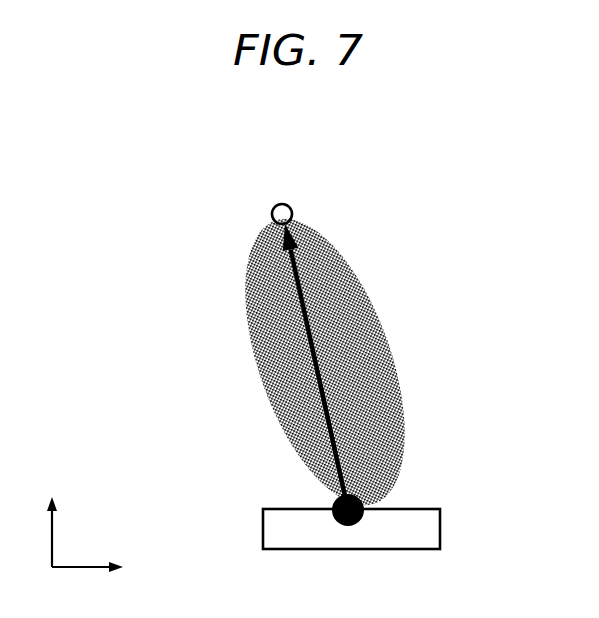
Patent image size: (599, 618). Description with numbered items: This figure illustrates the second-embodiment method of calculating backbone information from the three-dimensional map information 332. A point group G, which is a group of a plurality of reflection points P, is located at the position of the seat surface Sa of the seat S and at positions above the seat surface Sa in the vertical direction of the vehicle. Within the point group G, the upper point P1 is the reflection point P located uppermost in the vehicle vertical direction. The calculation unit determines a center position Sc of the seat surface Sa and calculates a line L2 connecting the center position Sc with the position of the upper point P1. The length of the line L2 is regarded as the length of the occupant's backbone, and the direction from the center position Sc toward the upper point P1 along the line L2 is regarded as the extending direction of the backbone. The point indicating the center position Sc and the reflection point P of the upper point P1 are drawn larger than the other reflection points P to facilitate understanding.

The three-dimensional map information 332 is at (491, 212).
The reflection points P is at (263, 264).
The upper point P1 is at (282, 203).
The point group G is at (314, 362).
The line L2 is at (315, 355).
The seat S is at (375, 494).
The seat surface Sa is at (421, 509).
The center position Sc is at (336, 503).